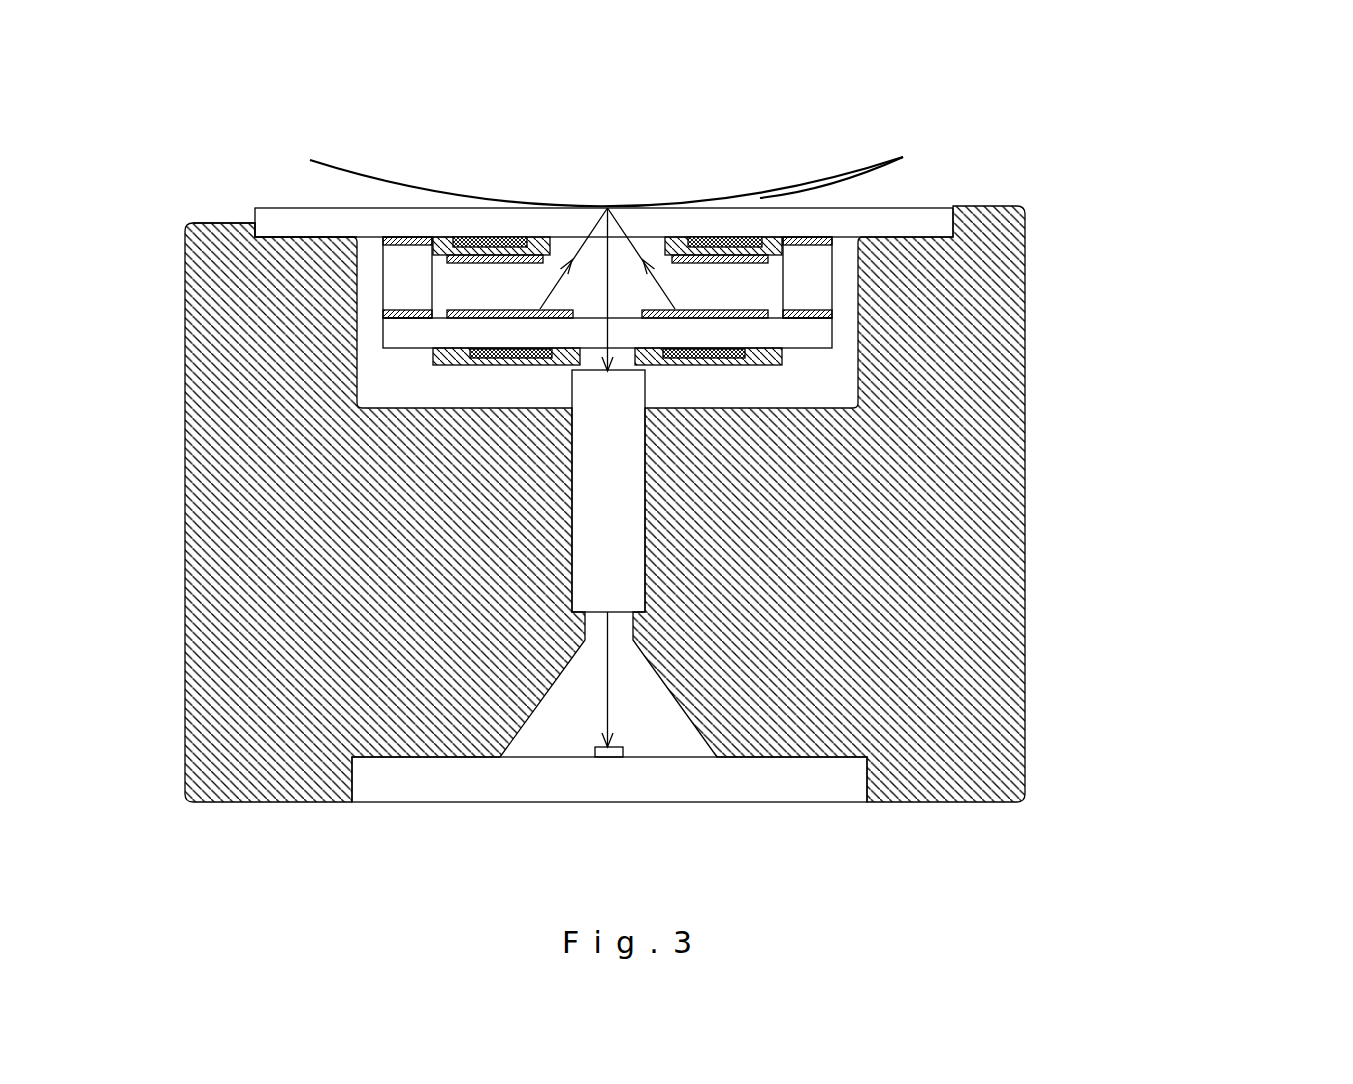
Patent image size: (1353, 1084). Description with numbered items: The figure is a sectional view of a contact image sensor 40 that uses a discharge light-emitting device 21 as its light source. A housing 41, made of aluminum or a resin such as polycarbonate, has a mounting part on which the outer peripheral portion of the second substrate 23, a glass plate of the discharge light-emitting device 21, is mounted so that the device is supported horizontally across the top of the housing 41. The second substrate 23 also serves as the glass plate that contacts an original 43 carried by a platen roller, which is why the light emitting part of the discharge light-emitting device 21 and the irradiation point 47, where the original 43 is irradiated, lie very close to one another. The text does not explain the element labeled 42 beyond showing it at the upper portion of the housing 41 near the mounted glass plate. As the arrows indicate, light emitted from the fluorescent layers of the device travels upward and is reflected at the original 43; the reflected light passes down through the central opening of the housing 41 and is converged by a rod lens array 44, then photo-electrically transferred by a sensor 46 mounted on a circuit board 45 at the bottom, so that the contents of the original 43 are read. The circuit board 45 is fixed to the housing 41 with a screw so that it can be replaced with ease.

The discharge light-emitting device 21 is at (852, 192).
The second substrate 23 is at (927, 222).
The contact image sensor 40 is at (167, 102).
The housing 41 is at (1025, 352).
The plate holding portion of housing 42 is at (277, 243).
The original 43 is at (455, 193).
The rod lens array 44 is at (618, 395).
The circuit board 45 is at (823, 785).
The sensor 46 is at (623, 752).
The irradiation point 47 is at (607, 206).